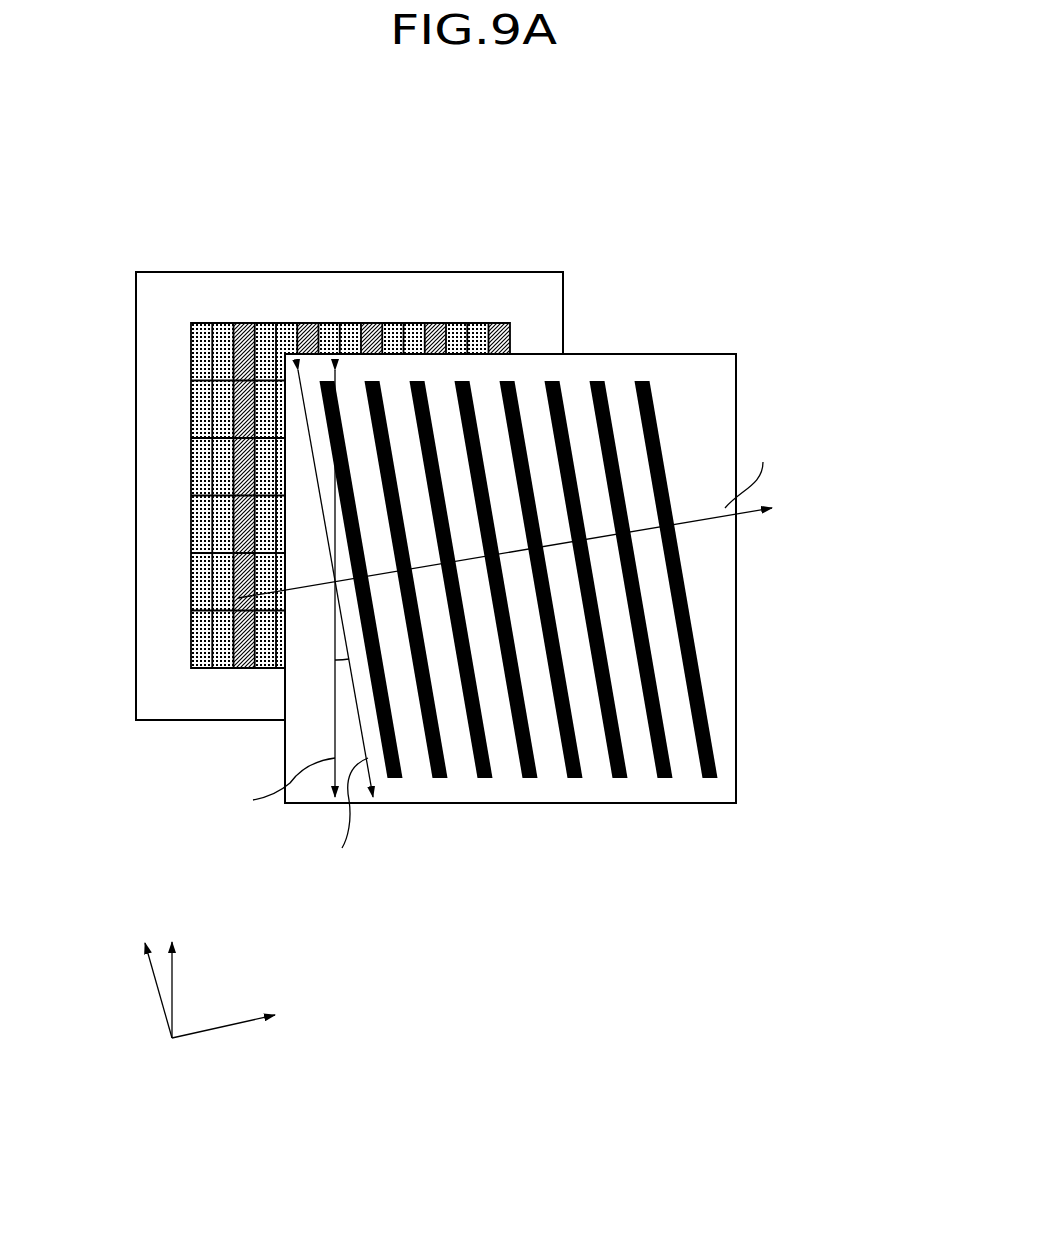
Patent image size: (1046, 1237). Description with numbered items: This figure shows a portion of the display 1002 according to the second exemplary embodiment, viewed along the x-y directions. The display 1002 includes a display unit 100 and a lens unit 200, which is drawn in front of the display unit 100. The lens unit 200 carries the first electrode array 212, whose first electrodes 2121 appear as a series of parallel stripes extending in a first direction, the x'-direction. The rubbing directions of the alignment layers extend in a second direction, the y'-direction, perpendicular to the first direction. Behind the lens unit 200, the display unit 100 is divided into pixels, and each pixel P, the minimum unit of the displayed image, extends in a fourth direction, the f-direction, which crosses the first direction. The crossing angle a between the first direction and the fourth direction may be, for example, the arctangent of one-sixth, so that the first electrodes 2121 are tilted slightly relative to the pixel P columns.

The display 1002 is at (501, 174).
The display unit 100 is at (349, 452).
The pixel P is at (220, 342).
The lens unit 200 is at (547, 520).
The first electrode array 212 is at (565, 507).
The first electrode 2121 is at (660, 448).
The crossing angle a is at (347, 662).